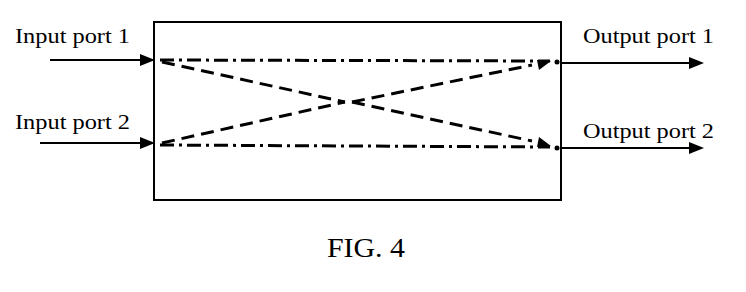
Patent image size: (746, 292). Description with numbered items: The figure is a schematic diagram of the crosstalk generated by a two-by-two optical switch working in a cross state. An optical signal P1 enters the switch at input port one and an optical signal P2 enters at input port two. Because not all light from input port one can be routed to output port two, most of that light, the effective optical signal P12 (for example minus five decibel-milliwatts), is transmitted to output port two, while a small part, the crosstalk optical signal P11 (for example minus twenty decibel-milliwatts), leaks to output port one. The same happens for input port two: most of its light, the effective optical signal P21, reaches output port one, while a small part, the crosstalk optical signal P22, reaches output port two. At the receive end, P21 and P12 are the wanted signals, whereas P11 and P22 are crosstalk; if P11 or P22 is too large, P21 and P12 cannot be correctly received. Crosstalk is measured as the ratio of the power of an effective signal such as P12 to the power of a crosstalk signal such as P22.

The optical signal input from input port 1 P1 is at (102, 74).
The optical signal input from input port 2 P2 is at (97, 158).
The crosstalk optical signal from input port 1 to output port 1 P11 is at (360, 48).
The effective optical signal from input port 1 to output port 2 P12 is at (356, 124).
The effective optical signal from input port 2 to output port 1 P21 is at (356, 82).
The crosstalk optical signal from input port 2 to output port 2 P22 is at (360, 161).